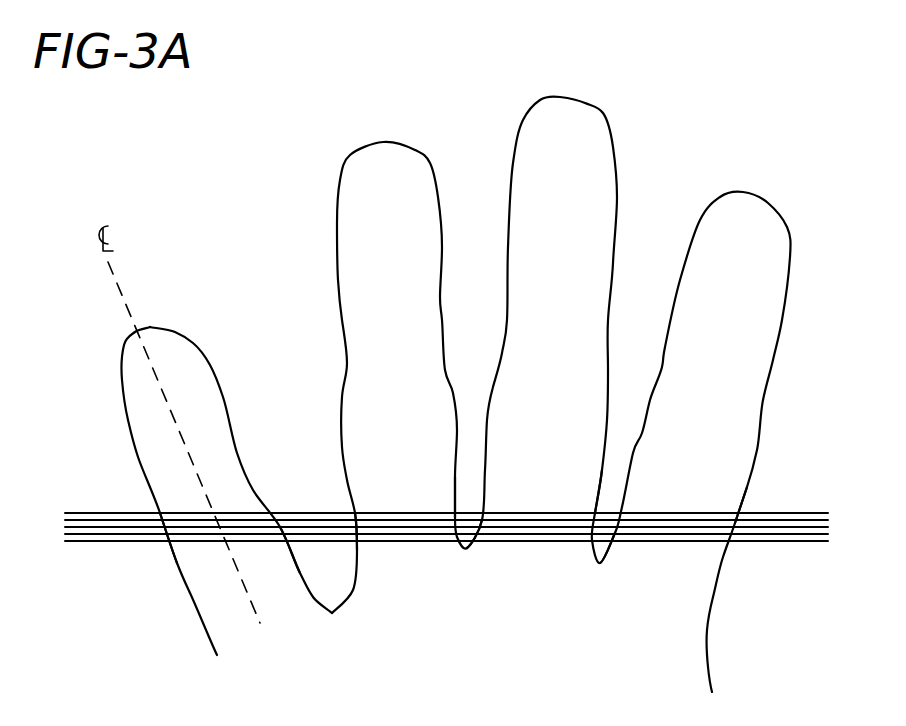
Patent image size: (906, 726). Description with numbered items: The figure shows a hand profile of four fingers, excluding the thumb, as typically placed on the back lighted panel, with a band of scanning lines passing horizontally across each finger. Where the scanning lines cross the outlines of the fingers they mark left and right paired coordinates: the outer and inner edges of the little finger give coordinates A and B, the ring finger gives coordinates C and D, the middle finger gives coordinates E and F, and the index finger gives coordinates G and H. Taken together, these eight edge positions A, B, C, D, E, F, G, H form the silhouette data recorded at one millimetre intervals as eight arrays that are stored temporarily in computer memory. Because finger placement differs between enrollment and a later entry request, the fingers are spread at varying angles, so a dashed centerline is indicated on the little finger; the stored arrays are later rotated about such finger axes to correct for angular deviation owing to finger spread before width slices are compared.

The finger edge coordinate A is at (175, 523).
The finger edge coordinate B is at (264, 528).
The finger edge coordinate C is at (368, 517).
The finger edge coordinate D is at (443, 497).
The finger edge coordinate E is at (488, 516).
The finger edge coordinate F is at (588, 492).
The finger edge coordinate G is at (631, 523).
The finger edge coordinate H is at (728, 503).